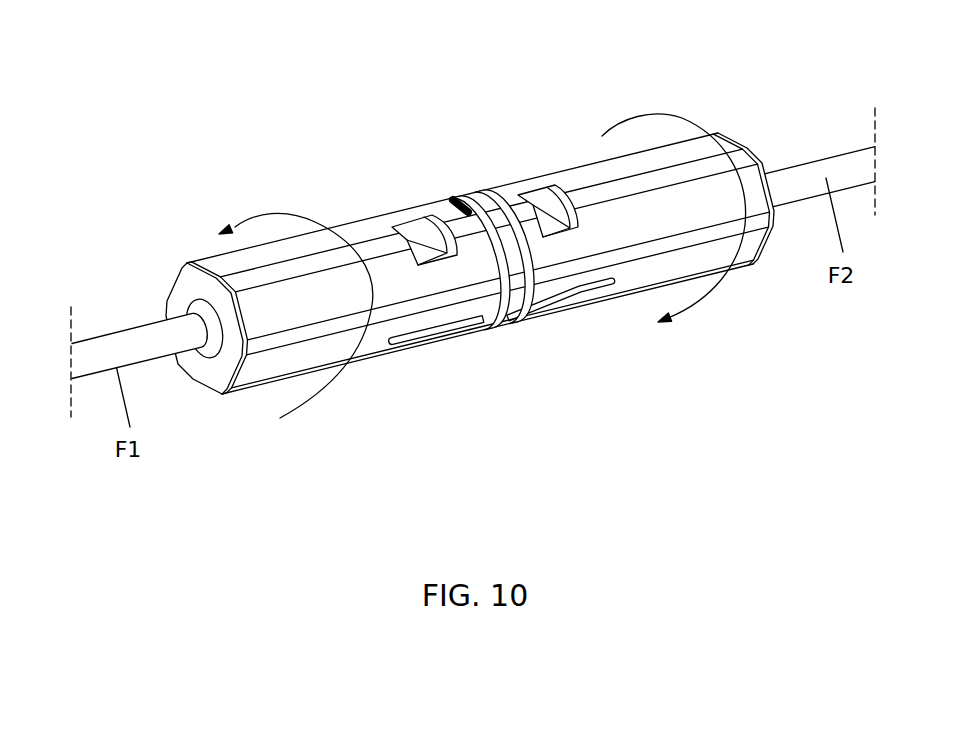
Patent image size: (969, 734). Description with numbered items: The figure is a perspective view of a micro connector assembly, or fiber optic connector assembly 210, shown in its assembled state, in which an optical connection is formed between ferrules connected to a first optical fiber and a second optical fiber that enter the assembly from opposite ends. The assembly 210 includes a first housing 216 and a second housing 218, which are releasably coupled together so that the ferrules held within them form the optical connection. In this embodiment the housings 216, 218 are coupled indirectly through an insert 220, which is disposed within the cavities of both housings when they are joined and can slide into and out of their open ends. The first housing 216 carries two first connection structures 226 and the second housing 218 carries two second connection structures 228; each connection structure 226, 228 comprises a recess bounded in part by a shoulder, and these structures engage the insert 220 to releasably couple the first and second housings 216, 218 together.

The fiber optic connector assembly 210 is at (362, 74).
The first micro connector ferrule housing 216 is at (315, 192).
The second micro connector ferrule housing 218 is at (572, 133).
The insert 220 is at (440, 174).
The first connection structure 226 is at (401, 203).
The second connection structure 228 is at (528, 175).